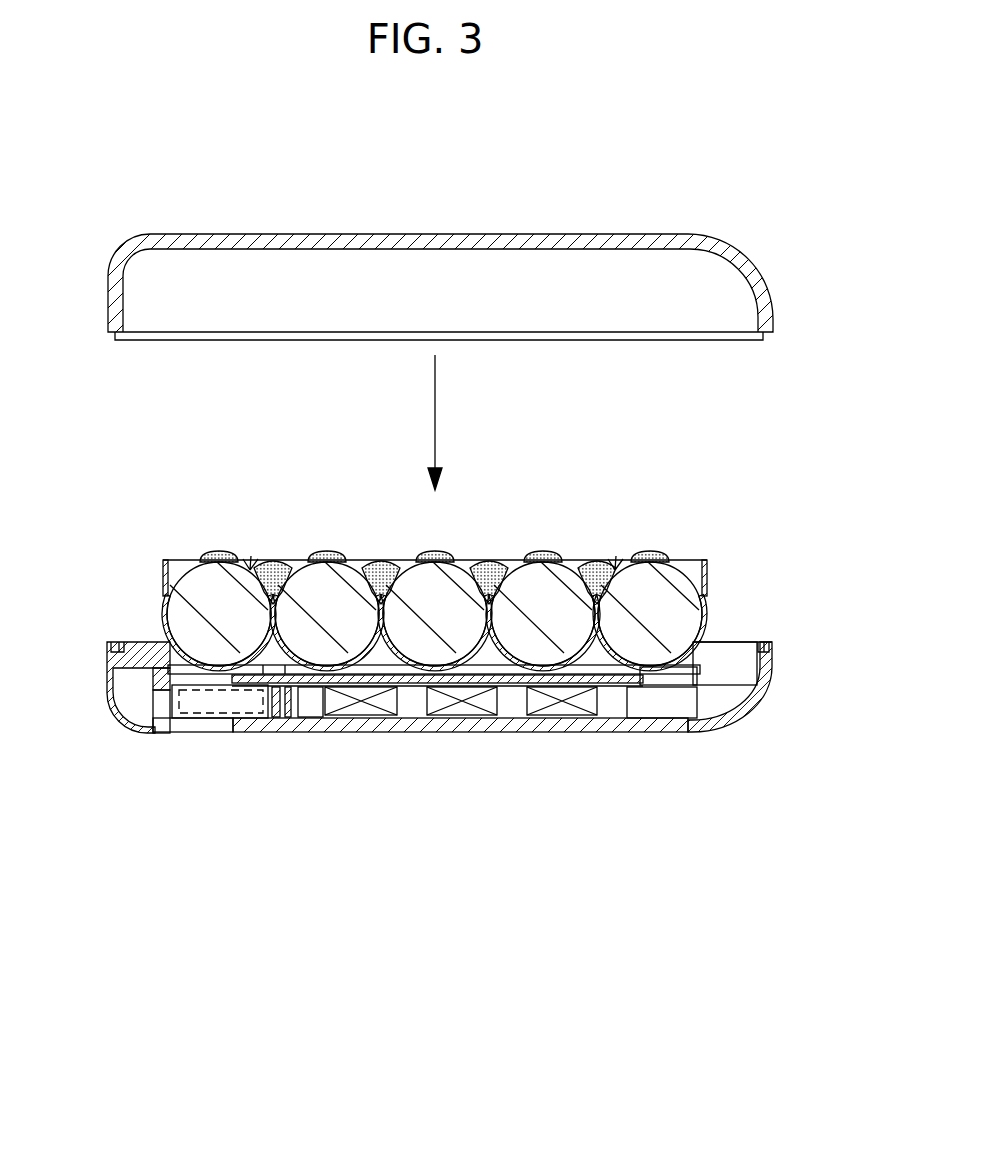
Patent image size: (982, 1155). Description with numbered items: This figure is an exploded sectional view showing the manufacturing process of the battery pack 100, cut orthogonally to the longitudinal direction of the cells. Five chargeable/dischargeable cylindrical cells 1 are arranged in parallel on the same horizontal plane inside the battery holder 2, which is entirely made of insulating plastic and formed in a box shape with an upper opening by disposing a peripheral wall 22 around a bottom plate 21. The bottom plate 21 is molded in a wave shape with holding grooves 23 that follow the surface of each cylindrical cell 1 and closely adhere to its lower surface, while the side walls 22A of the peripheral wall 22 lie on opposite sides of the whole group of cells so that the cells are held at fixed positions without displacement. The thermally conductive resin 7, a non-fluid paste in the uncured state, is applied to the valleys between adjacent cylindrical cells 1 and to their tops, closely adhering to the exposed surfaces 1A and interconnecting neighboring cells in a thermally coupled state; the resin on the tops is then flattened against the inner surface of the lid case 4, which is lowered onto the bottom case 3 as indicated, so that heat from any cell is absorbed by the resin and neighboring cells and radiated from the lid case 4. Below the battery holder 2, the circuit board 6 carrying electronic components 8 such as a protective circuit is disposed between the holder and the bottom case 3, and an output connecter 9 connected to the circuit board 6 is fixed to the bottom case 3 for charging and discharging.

The battery pack 100 is at (703, 191).
The lid case 4 is at (437, 240).
The cylindrical cell 1 is at (200, 583).
The exposed surface 1A is at (250, 562).
The thermally conductive resin 7 is at (213, 552).
The battery holder 2 is at (88, 928).
The bottom plate 21 is at (298, 650).
The peripheral wall 22 is at (451, 757).
The side wall 22A is at (162, 590).
The holding groove 23 is at (330, 705).
The electronic component 8 is at (455, 707).
The output connecter 9 is at (205, 705).
The circuit board 6 is at (292, 650).
The bottom case 3 is at (520, 728).